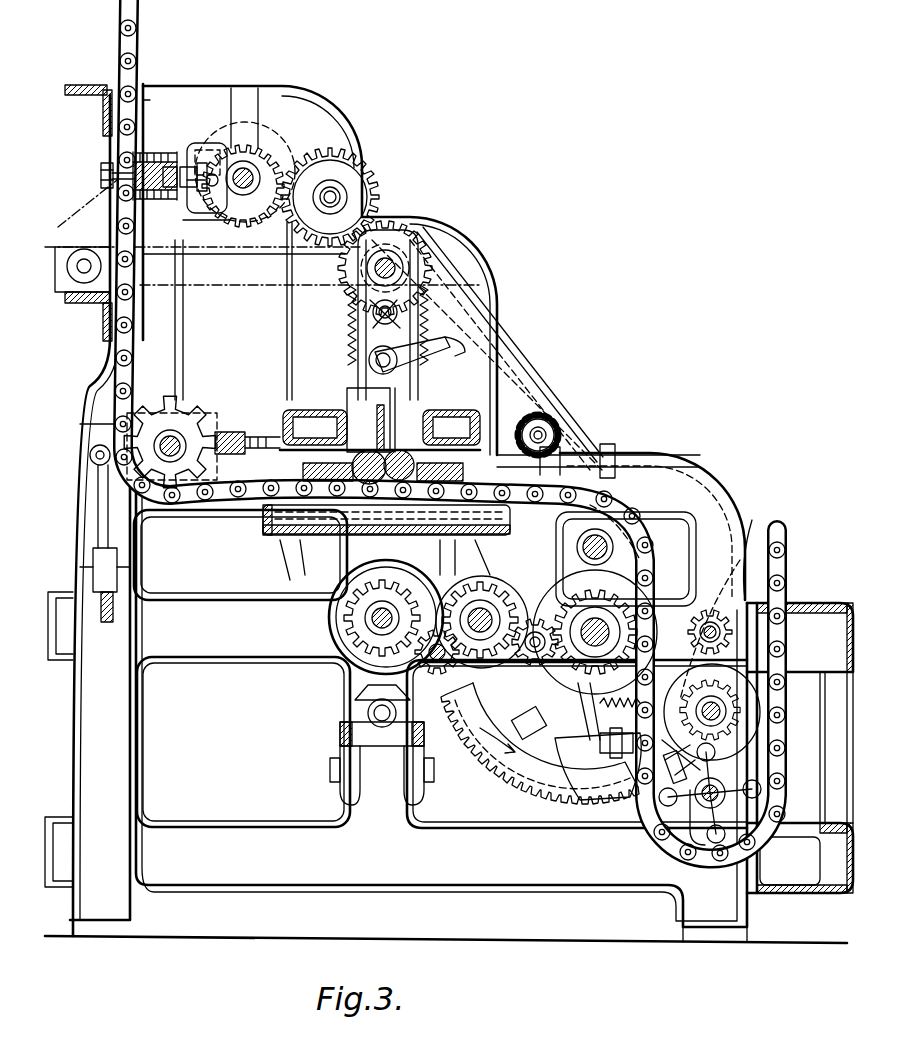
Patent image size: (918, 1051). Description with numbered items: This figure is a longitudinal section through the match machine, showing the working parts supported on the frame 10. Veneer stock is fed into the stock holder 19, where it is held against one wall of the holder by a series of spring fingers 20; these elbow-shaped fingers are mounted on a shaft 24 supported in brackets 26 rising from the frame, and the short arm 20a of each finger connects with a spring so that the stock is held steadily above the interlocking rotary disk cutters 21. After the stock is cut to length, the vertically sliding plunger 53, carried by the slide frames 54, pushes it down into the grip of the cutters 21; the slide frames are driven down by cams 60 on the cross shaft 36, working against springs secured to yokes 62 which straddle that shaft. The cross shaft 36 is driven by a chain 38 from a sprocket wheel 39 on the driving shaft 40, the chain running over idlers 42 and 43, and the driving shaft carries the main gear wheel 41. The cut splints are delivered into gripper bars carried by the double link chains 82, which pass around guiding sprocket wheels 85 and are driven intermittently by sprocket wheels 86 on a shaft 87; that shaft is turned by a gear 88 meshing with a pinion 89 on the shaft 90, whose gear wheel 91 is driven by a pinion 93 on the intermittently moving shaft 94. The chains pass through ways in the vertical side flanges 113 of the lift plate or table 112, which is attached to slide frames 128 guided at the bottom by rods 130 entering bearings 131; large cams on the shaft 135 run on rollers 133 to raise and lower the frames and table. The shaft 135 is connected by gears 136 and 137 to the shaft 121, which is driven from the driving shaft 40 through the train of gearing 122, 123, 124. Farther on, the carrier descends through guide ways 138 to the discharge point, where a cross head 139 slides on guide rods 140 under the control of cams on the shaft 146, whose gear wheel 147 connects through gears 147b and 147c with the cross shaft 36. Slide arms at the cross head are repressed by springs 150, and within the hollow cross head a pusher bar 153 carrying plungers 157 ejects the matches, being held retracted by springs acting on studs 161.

The frame 10 is at (277, 655).
The stock holder 19 is at (382, 435).
The spring fingers 20 is at (398, 413).
The short arm 20a is at (430, 367).
The rotary cutters 21 is at (340, 522).
The shaft 24 is at (386, 362).
The brackets 26 is at (290, 398).
The cross shaft 36 is at (436, 222).
The chain 38 is at (548, 385).
The sprocket wheel 39 is at (553, 715).
The driving shaft 40 is at (614, 635).
The gear wheel 41 is at (480, 768).
The idler 42 is at (556, 428).
The idler 43 is at (503, 456).
The vertically sliding plunger 53 is at (390, 415).
The slide frames 54 is at (410, 326).
The cams 60 is at (433, 268).
The yokes 62 is at (357, 277).
The double link chains 82 is at (134, 42).
The sprocket wheels 85 is at (232, 392).
The sprocket wheels 86 is at (758, 770).
The shaft 87 is at (707, 848).
The gear 88 is at (760, 743).
The pinion 89 is at (783, 667).
The shaft 90 is at (737, 685).
The gear wheel 91 is at (737, 660).
The pinion 93 is at (745, 560).
The shaft 94 is at (712, 610).
The lift plate 112 is at (277, 528).
The vertical side flanges 113 is at (260, 508).
The shaft 121 is at (508, 662).
The gear 122 is at (516, 600).
The middle gear 123 is at (560, 670).
The gear 124 is at (657, 583).
The slide frame 128 is at (510, 548).
The rods 130 is at (370, 672).
The bearings 131 is at (357, 700).
The rollers 133 is at (358, 715).
The shaft 135 is at (370, 618).
The gear 136 is at (353, 630).
The gear 137 is at (478, 673).
The guide ways 138 is at (171, 100).
The cross head 139 is at (207, 150).
The guide rods 140 is at (100, 170).
The shaft 146 is at (224, 221).
The gear wheel 147 is at (268, 228).
The gear 147b is at (393, 152).
The gear 147c is at (412, 240).
The springs 150 is at (158, 148).
The pusher bar 153 is at (160, 200).
The plungers 157 is at (110, 190).
The studs 161 is at (214, 186).